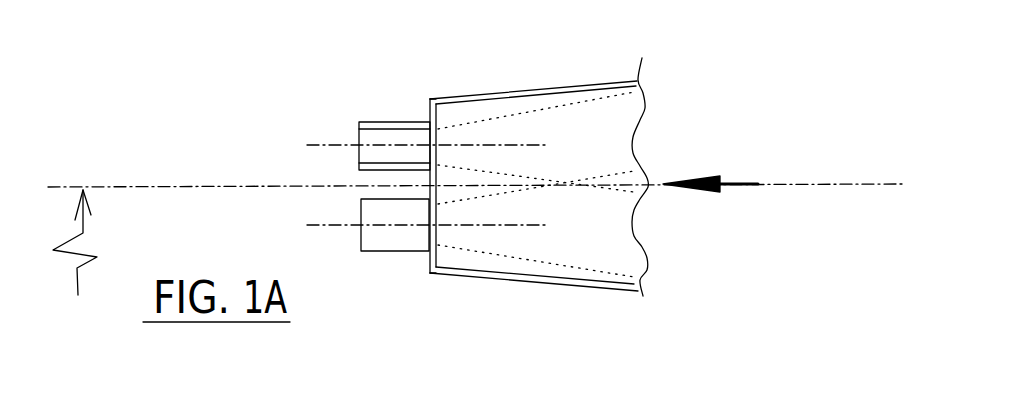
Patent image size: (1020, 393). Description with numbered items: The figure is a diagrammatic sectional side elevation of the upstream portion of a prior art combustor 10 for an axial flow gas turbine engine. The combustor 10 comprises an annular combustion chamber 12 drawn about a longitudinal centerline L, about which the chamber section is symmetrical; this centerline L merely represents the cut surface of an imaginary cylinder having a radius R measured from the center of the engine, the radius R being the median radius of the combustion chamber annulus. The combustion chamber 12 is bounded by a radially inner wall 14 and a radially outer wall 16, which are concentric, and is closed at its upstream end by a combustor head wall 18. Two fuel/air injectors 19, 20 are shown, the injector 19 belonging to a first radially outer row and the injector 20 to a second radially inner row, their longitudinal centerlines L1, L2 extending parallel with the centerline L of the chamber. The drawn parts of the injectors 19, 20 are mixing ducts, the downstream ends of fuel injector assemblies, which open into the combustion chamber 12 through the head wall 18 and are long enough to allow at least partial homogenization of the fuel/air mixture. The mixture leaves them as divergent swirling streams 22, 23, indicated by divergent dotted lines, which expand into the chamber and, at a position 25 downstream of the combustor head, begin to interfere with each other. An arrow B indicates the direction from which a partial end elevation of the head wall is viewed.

The combustor 10 is at (539, 62).
The annular combustion chamber 12 is at (486, 87).
The radially inner wall 14 is at (530, 283).
The radially outer wall 16 is at (563, 85).
The combustor head wall 18 is at (428, 257).
The fuel/air injector 19 is at (390, 121).
The fuel/air injector 20 is at (381, 252).
The divergent swirling stream 22 is at (593, 103).
The divergent swirling stream 23 is at (600, 264).
The position downstream of the combustor head 25 is at (557, 184).
The arrow B is at (737, 184).
The longitudinal centerline L is at (825, 185).
The longitudinal centerline of injector L1 is at (328, 147).
The longitudinal centerline of injector L2 is at (337, 226).
The radius R is at (68, 242).